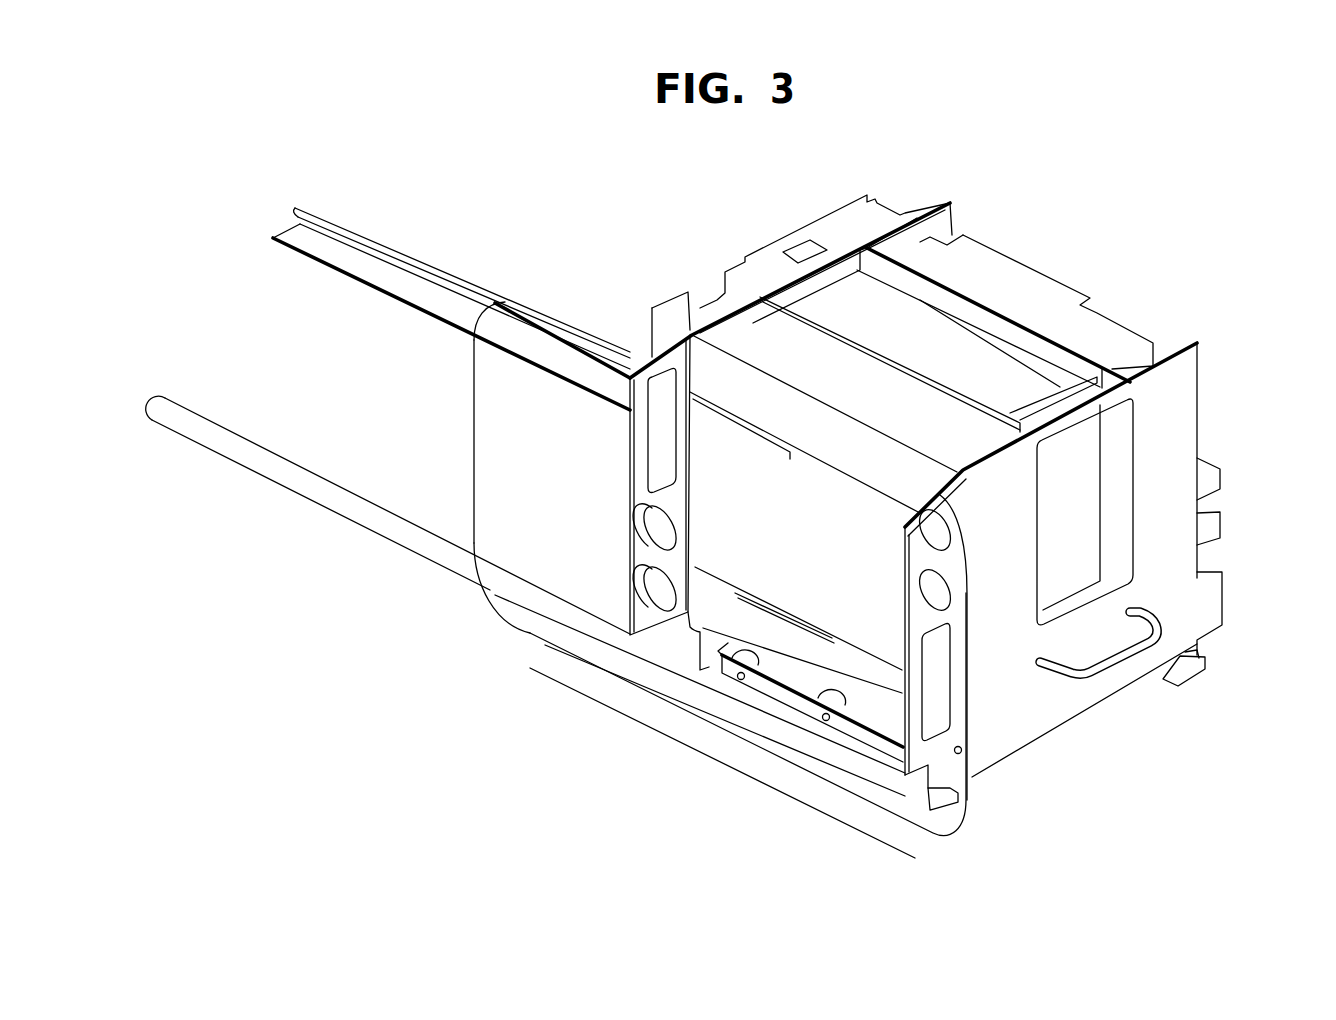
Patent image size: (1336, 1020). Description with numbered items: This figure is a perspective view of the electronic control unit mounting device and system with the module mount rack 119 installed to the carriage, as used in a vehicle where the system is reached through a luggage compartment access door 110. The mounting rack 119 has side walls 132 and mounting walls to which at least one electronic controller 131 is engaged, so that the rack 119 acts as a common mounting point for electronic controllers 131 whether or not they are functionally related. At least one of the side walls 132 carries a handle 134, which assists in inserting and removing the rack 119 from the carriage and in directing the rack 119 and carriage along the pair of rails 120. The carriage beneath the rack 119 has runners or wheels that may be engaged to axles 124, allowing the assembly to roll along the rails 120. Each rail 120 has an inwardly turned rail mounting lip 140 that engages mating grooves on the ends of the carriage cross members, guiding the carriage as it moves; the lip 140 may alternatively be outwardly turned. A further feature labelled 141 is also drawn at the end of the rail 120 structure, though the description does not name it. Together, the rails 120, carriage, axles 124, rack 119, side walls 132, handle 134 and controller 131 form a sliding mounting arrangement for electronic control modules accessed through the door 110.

The luggage compartment access door 110 is at (566, 662).
The module mount rack 119 is at (1209, 340).
The rails 120 is at (430, 264).
The axles 124 is at (882, 710).
The electronic controller 131 is at (978, 237).
The side walls 132 is at (1012, 762).
The handle 134 is at (1123, 666).
The rail mounting lip 140 is at (283, 226).
The thin cable strip 141 is at (303, 196).